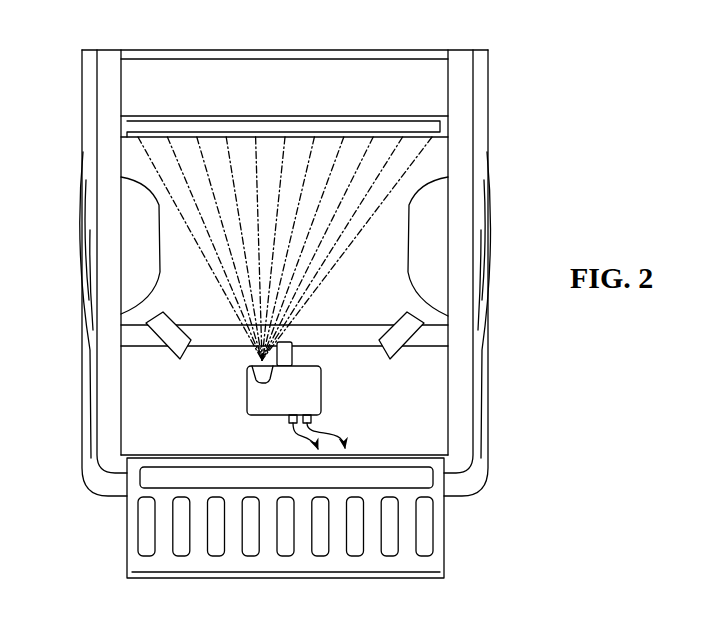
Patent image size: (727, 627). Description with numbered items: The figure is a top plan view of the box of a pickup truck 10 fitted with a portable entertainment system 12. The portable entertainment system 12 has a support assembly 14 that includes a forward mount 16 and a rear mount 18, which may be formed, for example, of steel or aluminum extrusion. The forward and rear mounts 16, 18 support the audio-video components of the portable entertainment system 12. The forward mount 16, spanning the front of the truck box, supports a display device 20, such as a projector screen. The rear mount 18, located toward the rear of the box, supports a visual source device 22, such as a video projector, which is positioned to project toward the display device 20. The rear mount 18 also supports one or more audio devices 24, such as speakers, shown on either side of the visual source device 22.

The pickup truck 10 is at (488, 130).
The portable entertainment system 12 is at (512, 172).
The support assembly 14 is at (514, 92).
The forward mount 16 is at (128, 138).
The rear mount 18 is at (443, 352).
The display device 20 is at (140, 120).
The visual source device 22 is at (247, 395).
The audio device 24 is at (156, 344).